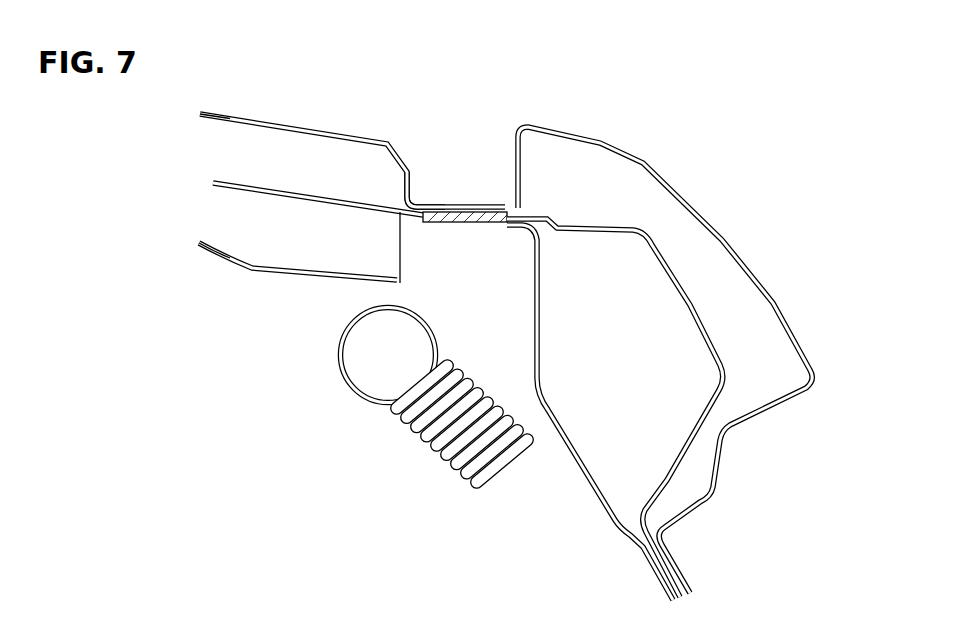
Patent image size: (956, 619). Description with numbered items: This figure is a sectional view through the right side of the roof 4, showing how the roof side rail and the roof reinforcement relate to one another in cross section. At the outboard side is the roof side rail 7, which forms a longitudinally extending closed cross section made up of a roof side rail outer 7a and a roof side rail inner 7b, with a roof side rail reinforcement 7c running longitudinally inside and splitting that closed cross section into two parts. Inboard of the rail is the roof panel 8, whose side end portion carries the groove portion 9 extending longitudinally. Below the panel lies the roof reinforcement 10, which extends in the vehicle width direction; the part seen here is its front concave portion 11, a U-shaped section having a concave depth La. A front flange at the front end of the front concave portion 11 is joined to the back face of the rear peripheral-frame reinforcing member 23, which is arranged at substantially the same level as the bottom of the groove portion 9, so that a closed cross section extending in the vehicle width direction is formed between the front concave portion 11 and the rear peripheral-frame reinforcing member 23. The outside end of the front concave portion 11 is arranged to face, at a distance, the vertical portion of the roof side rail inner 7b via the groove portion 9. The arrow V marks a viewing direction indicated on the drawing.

The roof 4 is at (249, 105).
The roof panel 8 is at (344, 133).
The groove portion 9 is at (421, 176).
The rear peripheral-frame reinforcing member 23 is at (245, 180).
The roof reinforcement 10 is at (251, 282).
The front concave portion 11 is at (218, 261).
The roof side rail 7 is at (665, 351).
The roof side rail outer 7a is at (773, 300).
The roof side rail inner 7b is at (541, 300).
The roof side rail reinforcement 7c is at (704, 318).
The concave depth La is at (377, 213).
The viewing direction V is at (593, 90).